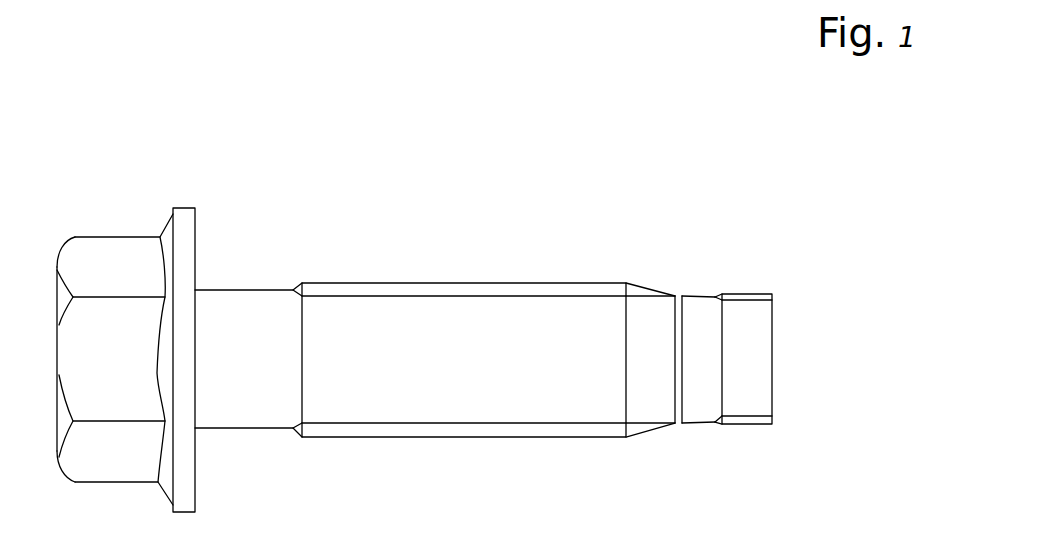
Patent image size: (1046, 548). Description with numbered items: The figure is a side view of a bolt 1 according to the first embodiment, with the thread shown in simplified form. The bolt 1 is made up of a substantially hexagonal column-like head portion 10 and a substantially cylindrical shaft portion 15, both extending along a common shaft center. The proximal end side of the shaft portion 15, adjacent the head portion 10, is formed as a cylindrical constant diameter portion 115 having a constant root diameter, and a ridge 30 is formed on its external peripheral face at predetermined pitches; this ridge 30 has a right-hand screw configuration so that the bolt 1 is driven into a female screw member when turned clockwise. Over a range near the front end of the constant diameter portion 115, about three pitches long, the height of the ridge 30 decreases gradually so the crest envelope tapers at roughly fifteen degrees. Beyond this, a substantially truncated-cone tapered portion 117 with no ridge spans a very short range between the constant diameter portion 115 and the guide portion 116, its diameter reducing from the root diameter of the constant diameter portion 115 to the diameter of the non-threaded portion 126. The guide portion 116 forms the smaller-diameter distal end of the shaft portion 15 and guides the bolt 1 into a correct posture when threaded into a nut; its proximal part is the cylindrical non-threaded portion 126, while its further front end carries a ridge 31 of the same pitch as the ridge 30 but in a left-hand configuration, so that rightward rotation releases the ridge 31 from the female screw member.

The bolt 1 is at (390, 217).
The head portion 10 is at (102, 235).
The shaft portion 15 is at (467, 443).
The ridge 30 is at (445, 292).
The constant diameter portion 115 is at (562, 437).
The tapered portion 117 is at (678, 296).
The non-threaded portion 126 is at (698, 413).
The guide portion 116 is at (725, 296).
The ridge 31 is at (757, 417).